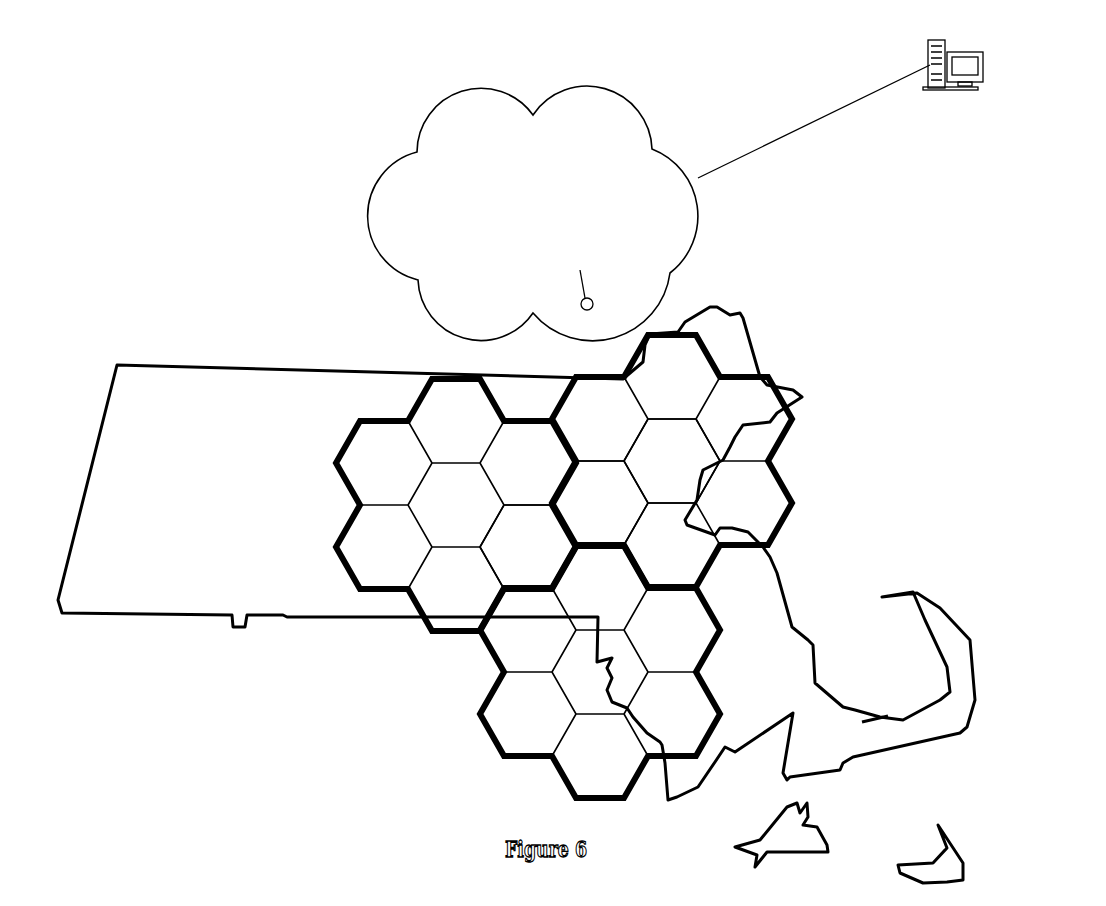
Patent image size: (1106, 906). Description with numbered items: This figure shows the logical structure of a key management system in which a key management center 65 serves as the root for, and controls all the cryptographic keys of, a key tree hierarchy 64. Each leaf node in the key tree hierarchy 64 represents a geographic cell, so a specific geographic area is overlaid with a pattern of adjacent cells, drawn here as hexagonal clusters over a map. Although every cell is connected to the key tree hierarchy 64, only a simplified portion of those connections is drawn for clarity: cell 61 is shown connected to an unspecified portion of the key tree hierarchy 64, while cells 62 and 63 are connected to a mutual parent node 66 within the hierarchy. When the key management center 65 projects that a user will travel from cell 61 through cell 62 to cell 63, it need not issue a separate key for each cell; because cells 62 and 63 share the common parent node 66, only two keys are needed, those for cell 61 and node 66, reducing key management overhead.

The cell 61 is at (515, 283).
The cell 62 is at (588, 310).
The cell 63 is at (591, 308).
The key tree hierarchy 64 is at (637, 122).
The key management center 65 is at (973, 50).
The parent node 66 is at (590, 298).